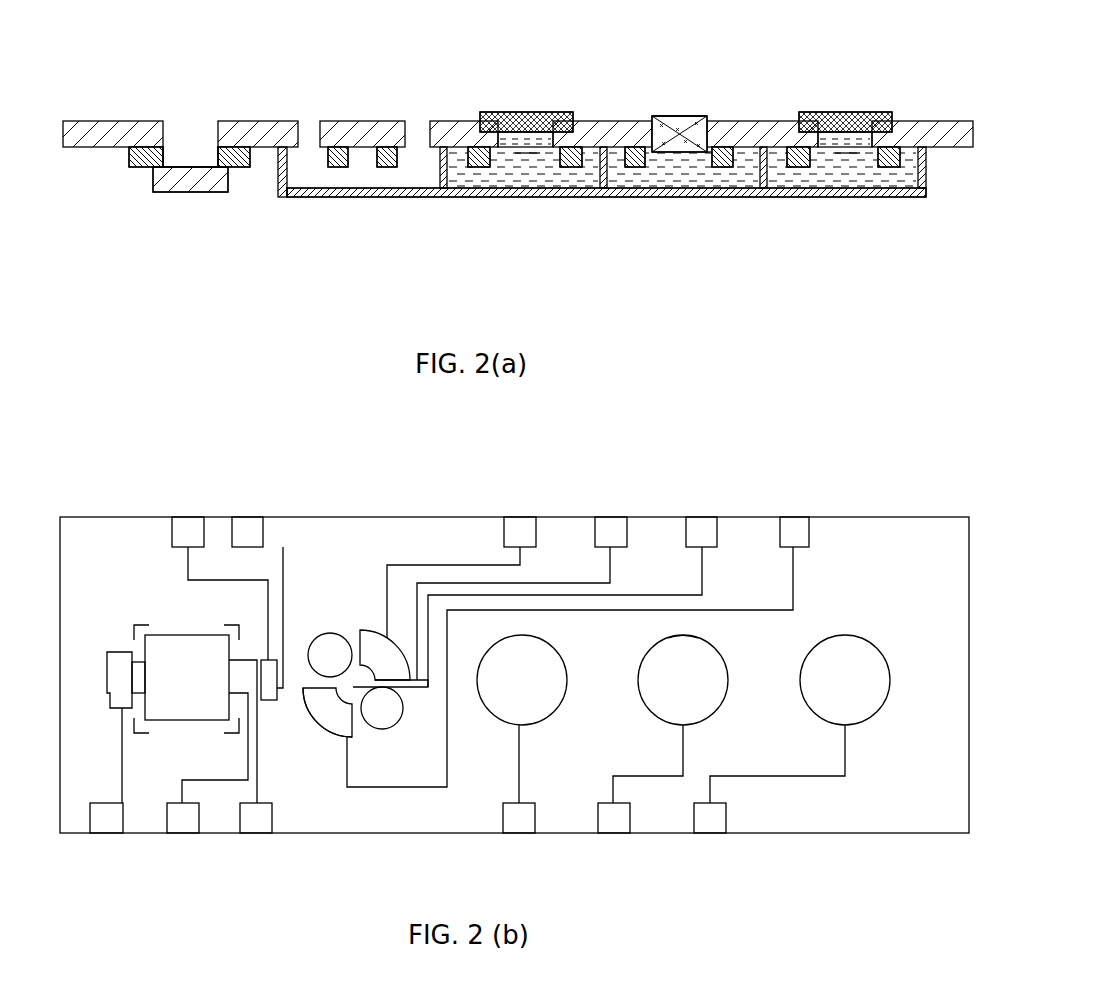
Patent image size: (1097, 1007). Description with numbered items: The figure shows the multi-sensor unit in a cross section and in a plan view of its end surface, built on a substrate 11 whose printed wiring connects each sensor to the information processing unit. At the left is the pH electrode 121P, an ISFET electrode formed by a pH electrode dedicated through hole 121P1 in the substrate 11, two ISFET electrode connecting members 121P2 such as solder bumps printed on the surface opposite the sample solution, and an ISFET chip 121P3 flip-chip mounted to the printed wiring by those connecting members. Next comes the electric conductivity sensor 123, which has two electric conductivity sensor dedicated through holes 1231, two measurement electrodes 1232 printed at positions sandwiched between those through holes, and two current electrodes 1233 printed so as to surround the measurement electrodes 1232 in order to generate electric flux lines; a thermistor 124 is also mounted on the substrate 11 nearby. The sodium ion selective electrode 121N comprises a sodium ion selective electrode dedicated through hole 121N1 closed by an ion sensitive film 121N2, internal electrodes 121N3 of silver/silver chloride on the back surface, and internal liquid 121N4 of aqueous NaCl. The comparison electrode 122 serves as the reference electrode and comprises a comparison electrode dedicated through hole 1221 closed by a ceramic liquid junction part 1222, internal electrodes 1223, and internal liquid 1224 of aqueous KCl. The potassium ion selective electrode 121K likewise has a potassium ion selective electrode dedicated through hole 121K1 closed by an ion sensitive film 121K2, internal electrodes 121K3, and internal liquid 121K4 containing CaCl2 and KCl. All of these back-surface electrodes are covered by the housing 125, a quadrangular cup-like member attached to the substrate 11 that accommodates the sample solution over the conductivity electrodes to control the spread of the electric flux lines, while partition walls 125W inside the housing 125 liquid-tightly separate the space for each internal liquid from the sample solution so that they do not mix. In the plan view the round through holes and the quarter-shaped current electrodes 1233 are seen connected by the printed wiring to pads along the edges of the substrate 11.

In FIG. 2A, the substrate 11 is at (112, 121).
In FIG. 2B, the substrate 11 is at (884, 517).
In FIG. 2A, the pH electrode dedicated through hole 121P1 is at (190, 140).
In FIG. 2B, the pH electrode dedicated through hole 121P1 is at (210, 635).
In FIG. 2A, the ISFET electrode connecting members 121P2 is at (140, 167).
In FIG. 2A, the ISFET chip 121P3 is at (200, 192).
In FIG. 2B, the ISFET chip 121P3 is at (160, 632).
In FIG. 2A, the pH electrode 121P is at (155, 238).
In FIG. 2B, the pH electrode 121P is at (166, 748).
In FIG. 2A, the electric conductivity sensor 123 is at (303, 220).
In FIG. 2B, the electric conductivity sensor 123 is at (328, 795).
In FIG. 2A, the housing 125 is at (330, 197).
In FIG. 2A, the electric conductivity sensor dedicated through holes 1231 is at (283, 147).
In FIG. 2B, the electric conductivity sensor dedicated through holes 1231 is at (330, 633).
In FIG. 2A, the measurement electrodes 1232 is at (338, 167).
In FIG. 2B, the measurement electrodes 1232 is at (360, 690).
In FIG. 2B, the current electrodes 1233 is at (365, 630).
In FIG. 2A, the partition walls 125W is at (455, 175).
In FIG. 2A, the internal electrodes 121N3 is at (480, 167).
In FIG. 2A, the sodium ion selective electrode dedicated through hole 121N1 is at (525, 150).
In FIG. 2A, the ion sensitive film 121N2 is at (520, 112).
In FIG. 2B, the ion sensitive film 121N2 is at (568, 678).
In FIG. 2A, the internal liquid 121N4 is at (545, 153).
In FIG. 2A, the sodium ion selective electrode 121N is at (486, 262).
In FIG. 2B, the sodium ion selective electrode 121N is at (492, 746).
In FIG. 2A, the comparison electrode dedicated through hole 1221 is at (660, 125).
In FIG. 2B, the comparison electrode dedicated through hole 1221 is at (729, 680).
In FIG. 2A, the liquid junction part 1222 is at (682, 135).
In FIG. 2B, the liquid junction part 1222 is at (683, 635).
In FIG. 2A, the internal liquid 1224 is at (713, 152).
In FIG. 2A, the internal electrodes 1223 is at (635, 167).
In FIG. 2A, the comparison electrode 122 is at (663, 262).
In FIG. 2B, the comparison electrode 122 is at (636, 733).
In FIG. 2A, the internal electrodes 121K3 is at (797, 167).
In FIG. 2A, the potassium ion selective electrode dedicated through hole 121K1 is at (825, 147).
In FIG. 2A, the ion sensitive film 121K2 is at (823, 112).
In FIG. 2B, the ion sensitive film 121K2 is at (845, 635).
In FIG. 2A, the internal liquid 121K4 is at (852, 153).
In FIG. 2A, the potassium ion selective electrode 121K is at (815, 262).
In FIG. 2B, the potassium ion selective electrode 121K is at (870, 765).
In FIG. 2B, the thermistor 124 is at (270, 700).